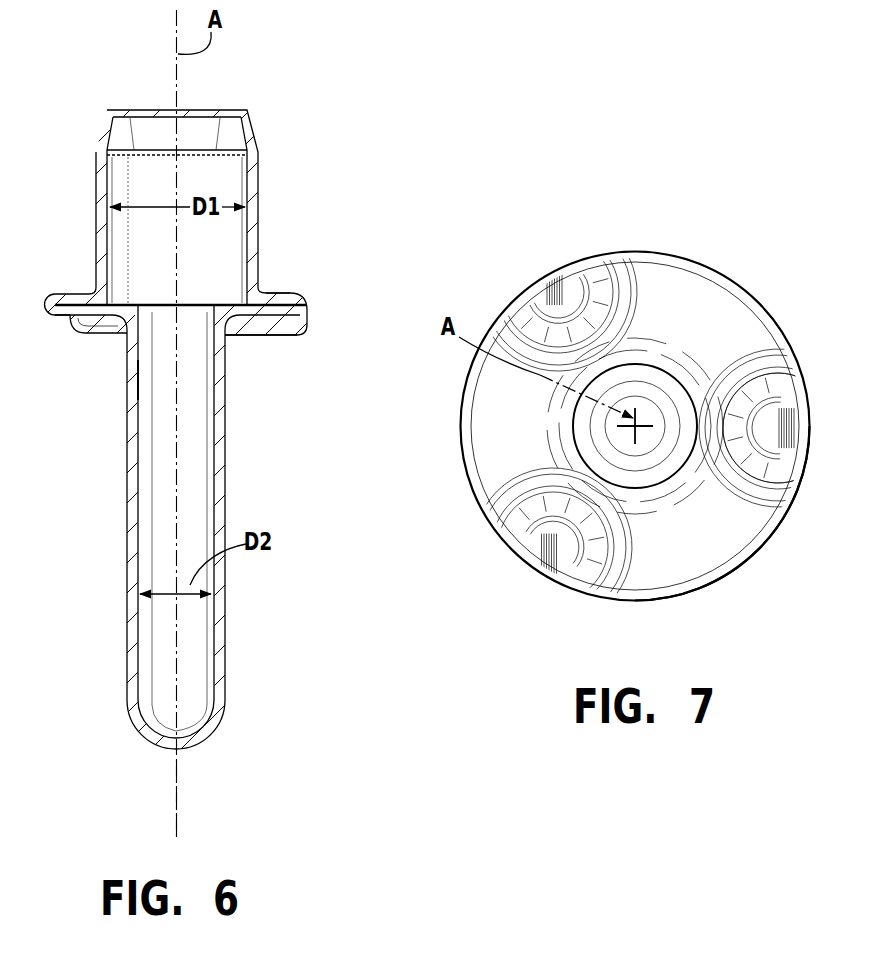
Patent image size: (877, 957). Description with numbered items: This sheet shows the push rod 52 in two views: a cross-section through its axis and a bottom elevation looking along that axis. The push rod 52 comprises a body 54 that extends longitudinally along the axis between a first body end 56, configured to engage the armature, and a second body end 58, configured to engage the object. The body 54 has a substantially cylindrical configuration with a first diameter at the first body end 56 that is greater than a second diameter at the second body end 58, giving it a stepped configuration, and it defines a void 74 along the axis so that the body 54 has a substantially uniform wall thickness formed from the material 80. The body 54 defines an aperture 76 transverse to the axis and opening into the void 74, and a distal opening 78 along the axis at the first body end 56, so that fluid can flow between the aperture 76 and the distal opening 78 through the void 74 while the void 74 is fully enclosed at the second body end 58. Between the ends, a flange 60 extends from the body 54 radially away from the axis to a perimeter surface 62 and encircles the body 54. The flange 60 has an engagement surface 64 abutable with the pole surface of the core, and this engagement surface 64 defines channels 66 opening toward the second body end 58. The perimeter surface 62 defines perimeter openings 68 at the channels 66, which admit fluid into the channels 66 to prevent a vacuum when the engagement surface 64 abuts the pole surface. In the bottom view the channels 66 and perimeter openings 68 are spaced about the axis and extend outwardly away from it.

In FIG. 6, the push rod 52 is at (371, 88).
In FIG. 7, the push rod 52 is at (727, 245).
In FIG. 6, the body 54 is at (256, 178).
In FIG. 7, the body 54 is at (658, 392).
In FIG. 6, the first body end 56 is at (148, 98).
In FIG. 6, the second body end 58 is at (193, 762).
In FIG. 7, the second body end 58 is at (626, 388).
In FIG. 6, the flange 60 is at (323, 320).
In FIG. 7, the flange 60 is at (735, 318).
In FIG. 6, the perimeter surface 62 is at (44, 305).
In FIG. 7, the perimeter surface 62 is at (459, 418).
In FIG. 6, the engagement surface 64 is at (282, 337).
In FIG. 7, the engagement surface 64 is at (786, 432).
In FIG. 6, the channel 66 is at (274, 298).
In FIG. 7, the channel 66 is at (687, 531).
In FIG. 6, the perimeter opening 68 is at (306, 297).
In FIG. 7, the perimeter opening 68 is at (728, 576).
In FIG. 6, the void 74 is at (165, 486).
In FIG. 6, the aperture 76 is at (142, 378).
In FIG. 6, the distal opening 78 is at (224, 107).
In FIG. 6, the material 80 is at (227, 643).